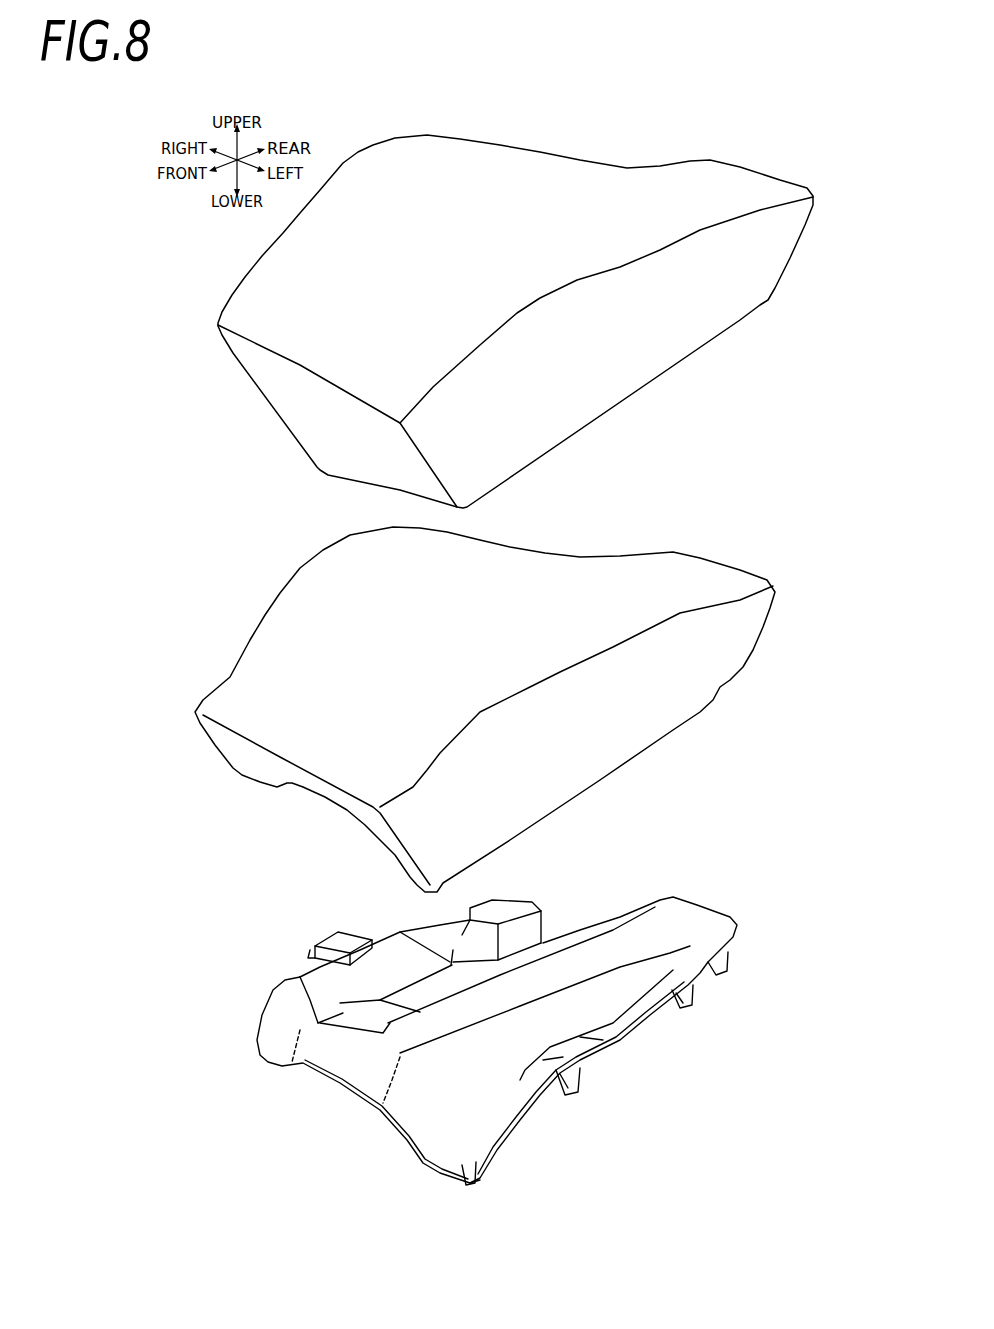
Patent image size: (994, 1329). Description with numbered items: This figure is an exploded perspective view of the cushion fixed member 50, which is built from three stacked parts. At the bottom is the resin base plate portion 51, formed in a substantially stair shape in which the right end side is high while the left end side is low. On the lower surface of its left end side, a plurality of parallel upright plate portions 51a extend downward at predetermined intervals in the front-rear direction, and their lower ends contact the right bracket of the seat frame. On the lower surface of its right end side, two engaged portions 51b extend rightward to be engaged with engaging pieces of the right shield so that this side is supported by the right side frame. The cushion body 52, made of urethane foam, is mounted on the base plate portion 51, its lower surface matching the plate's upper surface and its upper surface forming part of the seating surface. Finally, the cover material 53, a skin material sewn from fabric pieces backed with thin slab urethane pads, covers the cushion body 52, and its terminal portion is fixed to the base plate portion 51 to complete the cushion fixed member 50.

The cushion fixed member 50 is at (714, 140).
The cover material 53 is at (757, 270).
The cushion body 52 is at (713, 570).
The base plate portion 51 is at (668, 903).
The upright plate portions 51a is at (720, 968).
The engaged portions 51b is at (320, 943).